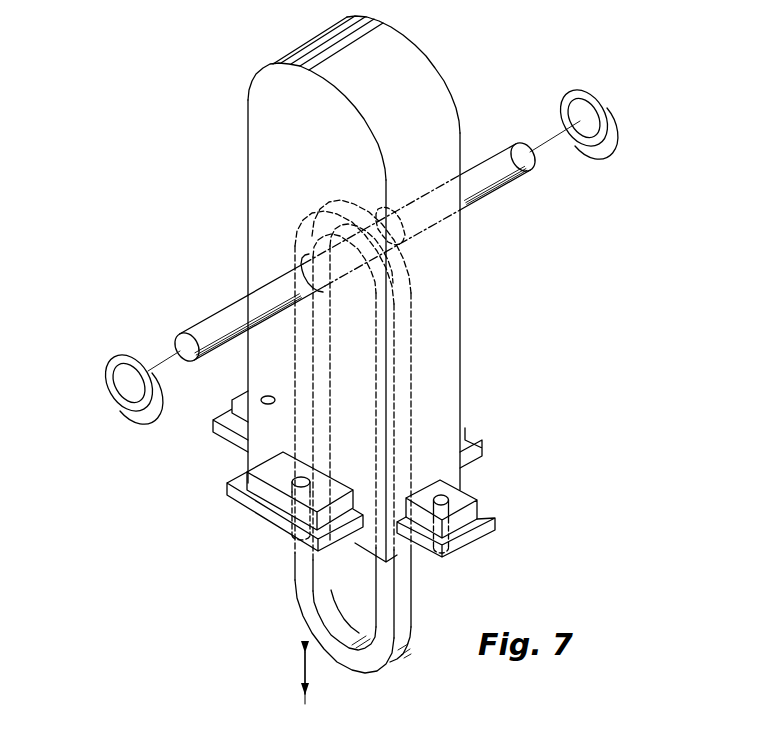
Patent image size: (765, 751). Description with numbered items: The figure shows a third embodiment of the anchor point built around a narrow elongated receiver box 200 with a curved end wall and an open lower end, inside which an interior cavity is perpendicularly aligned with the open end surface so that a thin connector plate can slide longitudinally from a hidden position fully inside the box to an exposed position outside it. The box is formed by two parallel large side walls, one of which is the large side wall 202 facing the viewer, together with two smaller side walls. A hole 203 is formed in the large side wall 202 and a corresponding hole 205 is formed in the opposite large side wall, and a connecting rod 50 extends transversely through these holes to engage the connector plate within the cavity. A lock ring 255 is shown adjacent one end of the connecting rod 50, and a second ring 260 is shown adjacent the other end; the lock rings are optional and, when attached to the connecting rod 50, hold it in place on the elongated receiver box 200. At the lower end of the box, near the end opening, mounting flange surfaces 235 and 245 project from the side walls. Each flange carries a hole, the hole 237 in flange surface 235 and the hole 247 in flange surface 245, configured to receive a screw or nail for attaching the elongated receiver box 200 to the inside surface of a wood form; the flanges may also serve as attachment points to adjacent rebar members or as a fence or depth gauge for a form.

The elongated receiver box 200 is at (418, 35).
The large side wall 202 is at (282, 120).
The hole 203 is at (300, 254).
The hole 205 is at (406, 236).
The connecting rod 50 is at (218, 316).
The lock ring 255 is at (590, 100).
The retaining ring 260 is at (110, 363).
The hole 247 is at (262, 398).
The mounting flange surface 245 is at (222, 432).
The hole 237 is at (445, 497).
The mounting flange surface 235 is at (479, 514).